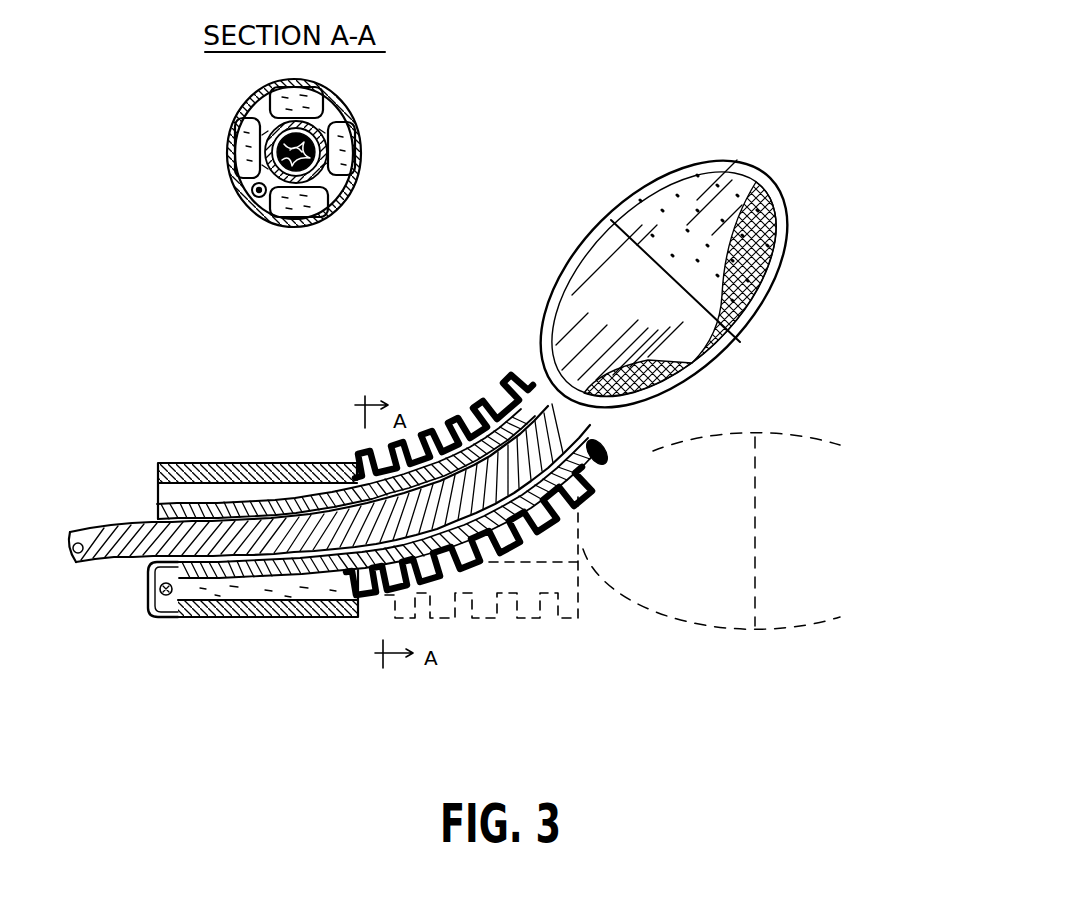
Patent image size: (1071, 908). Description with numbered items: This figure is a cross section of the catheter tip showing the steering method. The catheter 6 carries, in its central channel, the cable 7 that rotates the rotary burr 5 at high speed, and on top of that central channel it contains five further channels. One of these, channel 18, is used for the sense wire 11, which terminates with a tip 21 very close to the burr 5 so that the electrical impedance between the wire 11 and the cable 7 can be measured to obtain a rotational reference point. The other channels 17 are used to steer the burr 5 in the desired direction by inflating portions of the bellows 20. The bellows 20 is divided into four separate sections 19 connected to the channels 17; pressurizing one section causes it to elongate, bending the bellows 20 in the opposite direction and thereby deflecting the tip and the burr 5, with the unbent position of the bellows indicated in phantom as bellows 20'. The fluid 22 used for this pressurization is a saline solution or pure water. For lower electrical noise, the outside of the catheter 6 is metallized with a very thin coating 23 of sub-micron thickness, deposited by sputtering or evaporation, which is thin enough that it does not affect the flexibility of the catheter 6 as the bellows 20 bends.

The rotary burr 5 is at (565, 283).
The catheter 6 is at (213, 470).
The cable 7 is at (308, 138).
The sense wire 11 is at (256, 198).
The channels 17 is at (153, 604).
The channel 18 is at (252, 194).
The sections 19 is at (236, 130).
The bellows 20 is at (469, 470).
The bellows (phantom, straight position) 20' is at (481, 603).
The tip 21 is at (605, 444).
The fluid 22 is at (272, 603).
The coating 23 is at (325, 616).